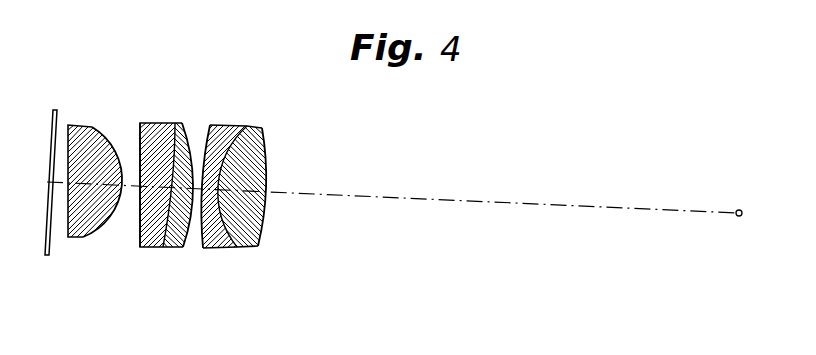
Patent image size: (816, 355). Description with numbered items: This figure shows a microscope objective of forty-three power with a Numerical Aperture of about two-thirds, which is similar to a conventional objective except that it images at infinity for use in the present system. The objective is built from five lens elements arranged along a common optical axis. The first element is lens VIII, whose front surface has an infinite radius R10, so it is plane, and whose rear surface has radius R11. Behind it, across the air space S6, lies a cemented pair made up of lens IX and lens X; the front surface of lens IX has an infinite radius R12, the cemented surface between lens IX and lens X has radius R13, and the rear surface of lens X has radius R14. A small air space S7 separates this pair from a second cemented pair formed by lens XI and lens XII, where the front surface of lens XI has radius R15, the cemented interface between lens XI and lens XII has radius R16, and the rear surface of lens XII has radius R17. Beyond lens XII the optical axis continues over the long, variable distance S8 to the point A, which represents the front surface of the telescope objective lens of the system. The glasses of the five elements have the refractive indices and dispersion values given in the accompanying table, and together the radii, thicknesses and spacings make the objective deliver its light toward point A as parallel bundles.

The lens VIII is at (95, 182).
The lens IX is at (150, 182).
The lens X is at (185, 182).
The lens XI is at (235, 184).
The lens XII is at (264, 169).
The radius R10 is at (59, 230).
The radius R11 is at (102, 207).
The radius R12 is at (139, 232).
The radius R13 is at (159, 236).
The radius R14 is at (186, 236).
The radius R15 is at (205, 235).
The radius R16 is at (244, 242).
The radius R17 is at (262, 227).
The air space s6 S6 is at (102, 207).
The air space s7 S7 is at (225, 206).
The distance s8 S8 is at (457, 200).
The point A is at (742, 210).